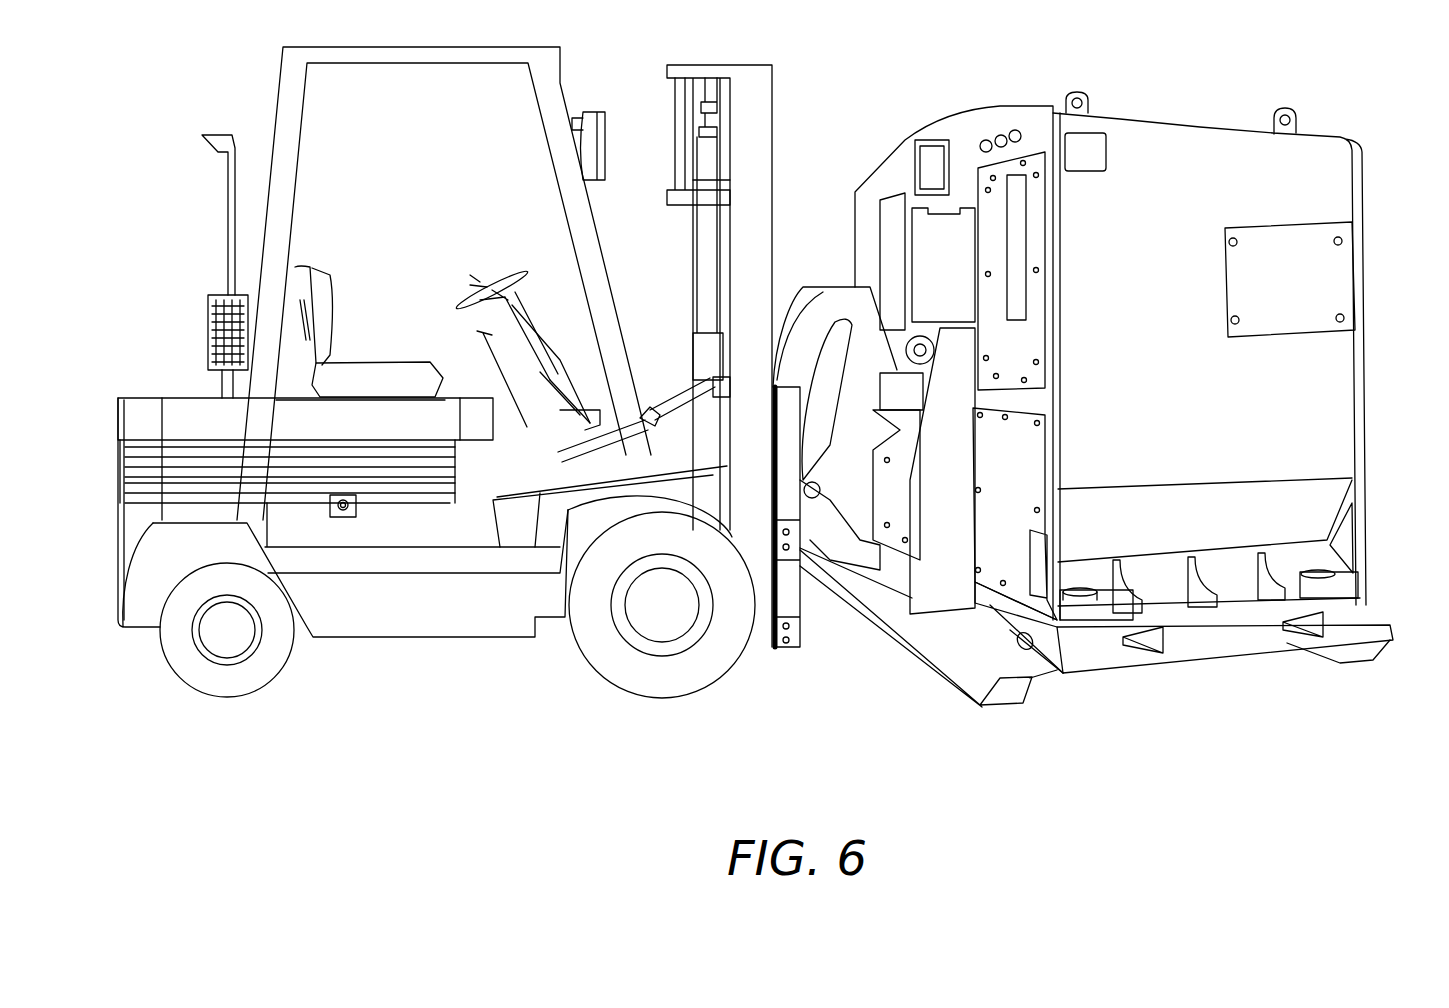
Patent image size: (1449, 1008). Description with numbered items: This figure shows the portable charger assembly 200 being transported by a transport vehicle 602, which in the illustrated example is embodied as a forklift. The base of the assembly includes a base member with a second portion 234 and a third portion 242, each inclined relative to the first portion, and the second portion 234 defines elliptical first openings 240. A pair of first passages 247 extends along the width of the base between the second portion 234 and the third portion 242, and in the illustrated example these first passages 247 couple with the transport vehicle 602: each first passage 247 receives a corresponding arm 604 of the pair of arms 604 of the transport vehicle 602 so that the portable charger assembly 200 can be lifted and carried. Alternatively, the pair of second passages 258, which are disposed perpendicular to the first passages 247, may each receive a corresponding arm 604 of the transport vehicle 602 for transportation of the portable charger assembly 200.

The transport vehicle 602 is at (190, 308).
The portable charger assembly 200 is at (1349, 101).
The third portion 242 is at (1374, 624).
The second passages 258 is at (1165, 645).
The first passages 247 is at (952, 627).
The arm 604 is at (982, 618).
The second portion 234 is at (987, 710).
The first openings 240 is at (1036, 663).